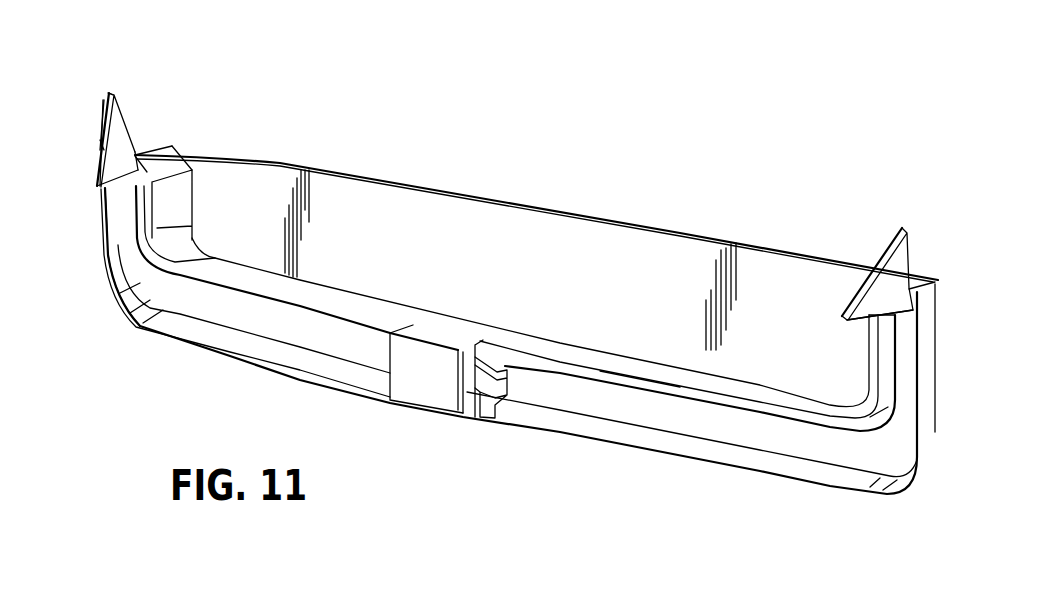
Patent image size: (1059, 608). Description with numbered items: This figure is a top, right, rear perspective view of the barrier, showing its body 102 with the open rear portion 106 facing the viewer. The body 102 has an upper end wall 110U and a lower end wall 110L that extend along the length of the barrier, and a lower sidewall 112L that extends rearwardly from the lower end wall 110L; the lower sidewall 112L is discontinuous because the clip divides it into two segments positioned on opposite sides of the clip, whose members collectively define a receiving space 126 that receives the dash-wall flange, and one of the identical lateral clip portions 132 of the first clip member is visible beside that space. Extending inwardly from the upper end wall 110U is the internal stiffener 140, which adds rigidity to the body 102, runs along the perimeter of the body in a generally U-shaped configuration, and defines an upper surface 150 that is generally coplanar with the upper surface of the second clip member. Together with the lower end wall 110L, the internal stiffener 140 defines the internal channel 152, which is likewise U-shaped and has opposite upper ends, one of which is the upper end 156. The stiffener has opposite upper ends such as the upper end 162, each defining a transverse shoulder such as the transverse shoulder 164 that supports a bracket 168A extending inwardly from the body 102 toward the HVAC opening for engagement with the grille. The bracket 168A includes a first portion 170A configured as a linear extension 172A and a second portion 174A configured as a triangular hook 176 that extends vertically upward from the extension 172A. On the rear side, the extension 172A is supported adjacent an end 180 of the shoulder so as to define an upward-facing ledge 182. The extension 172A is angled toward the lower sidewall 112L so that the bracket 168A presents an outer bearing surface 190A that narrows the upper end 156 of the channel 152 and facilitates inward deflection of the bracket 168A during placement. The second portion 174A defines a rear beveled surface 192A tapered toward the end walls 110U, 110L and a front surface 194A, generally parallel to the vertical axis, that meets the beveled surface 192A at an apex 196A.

The body 102 is at (612, 447).
The open rear portion 106 is at (812, 287).
The upper end wall 110U is at (570, 263).
The lower end wall 110L is at (335, 345).
The lower sidewall 112L is at (930, 432).
The receiving space 126 is at (472, 407).
The lateral clip portion 132 is at (515, 389).
The internal stiffener 140 is at (641, 365).
The upper surface 150 is at (740, 388).
The internal channel 152 is at (863, 453).
The upper end of the channel 156 is at (935, 298).
The upper end of the internal stiffener 162 is at (890, 340).
The transverse shoulder 164 is at (109, 262).
The bracket 168A is at (86, 120).
The first portion 170A is at (148, 163).
The linear extension 172A is at (178, 147).
The second portion 174A is at (86, 183).
The triangular hook 176 is at (118, 123).
The end of the shoulder 180 is at (105, 220).
The ledge 182 is at (183, 163).
The outer bearing surface 190A is at (108, 150).
The first beveled surface 192A is at (102, 100).
The second surface 194A is at (137, 162).
The apex 196A is at (111, 91).